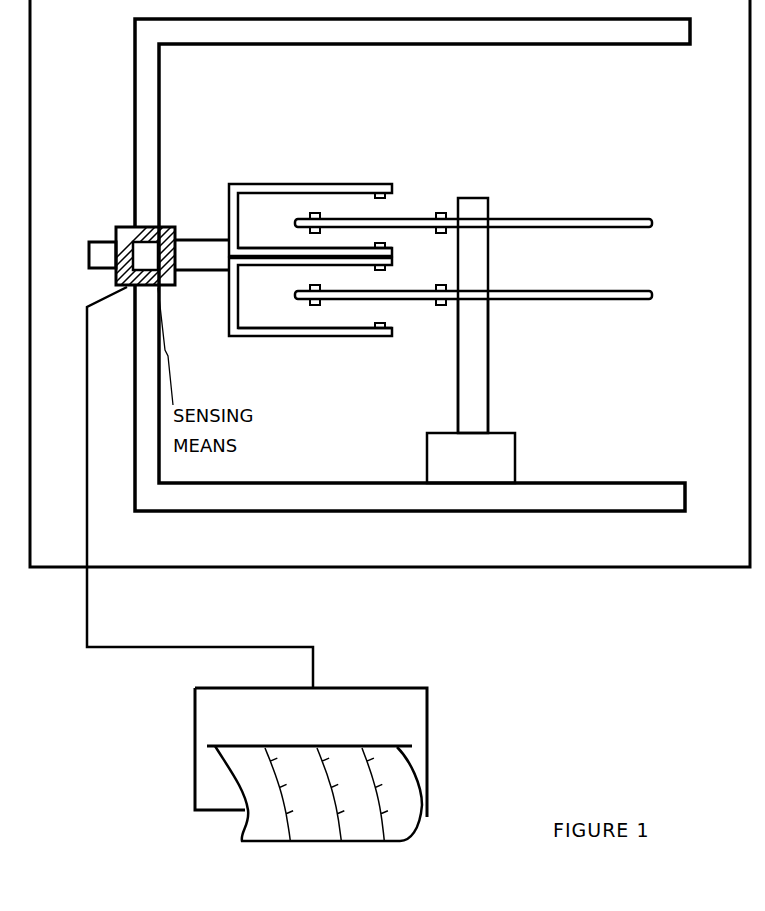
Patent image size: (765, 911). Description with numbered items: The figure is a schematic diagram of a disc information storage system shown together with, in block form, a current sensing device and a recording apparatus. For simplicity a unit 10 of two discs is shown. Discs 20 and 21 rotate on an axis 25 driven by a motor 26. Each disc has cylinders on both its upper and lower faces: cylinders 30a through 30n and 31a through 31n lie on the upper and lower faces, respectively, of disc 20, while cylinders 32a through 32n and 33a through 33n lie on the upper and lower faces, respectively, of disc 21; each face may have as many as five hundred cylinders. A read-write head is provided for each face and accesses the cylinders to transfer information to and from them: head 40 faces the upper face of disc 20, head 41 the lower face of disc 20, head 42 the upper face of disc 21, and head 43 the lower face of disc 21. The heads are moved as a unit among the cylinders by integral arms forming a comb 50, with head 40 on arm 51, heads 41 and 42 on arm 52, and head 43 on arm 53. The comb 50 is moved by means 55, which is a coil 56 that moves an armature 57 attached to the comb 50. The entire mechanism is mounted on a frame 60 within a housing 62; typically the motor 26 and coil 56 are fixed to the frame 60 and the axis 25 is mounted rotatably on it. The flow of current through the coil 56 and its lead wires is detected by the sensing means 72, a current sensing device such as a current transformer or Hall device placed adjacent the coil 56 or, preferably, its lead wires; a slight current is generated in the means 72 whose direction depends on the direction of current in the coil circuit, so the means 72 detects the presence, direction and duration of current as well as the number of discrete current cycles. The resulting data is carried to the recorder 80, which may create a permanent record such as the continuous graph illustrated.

The support post 10 is at (477, 183).
The upper plate 20 is at (653, 227).
The lower plate 21 is at (653, 299).
The post 25 is at (483, 366).
The base 26 is at (508, 445).
The contact on upper plate 30a is at (315, 216).
The contact on upper plate 31a is at (318, 216).
The contact on upper plate 30n is at (444, 217).
The contact on upper plate 31n is at (442, 231).
The contact on lower plate 32a is at (312, 301).
The contact on lower plate 33a is at (314, 303).
The contact on lower plate 32n is at (442, 290).
The contact on lower plate 33n is at (442, 304).
The contact on arm 51 40 is at (393, 192).
The contact on arm 52 41 is at (399, 250).
The contact on arm 52 42 is at (399, 276).
The contact on arm 53 43 is at (386, 337).
The conductor 50 is at (216, 250).
The upper arm 51 is at (256, 190).
The middle arm 52 is at (275, 260).
The lower arm 53 is at (265, 338).
The conductor 55 is at (167, 285).
The sensing means housing 56 is at (125, 230).
The lead 57 is at (92, 262).
The conductor loop 60 is at (622, 488).
The enclosure 62 is at (390, 283).
The sensing element 72 is at (145, 256).
The recorder 80 is at (430, 728).